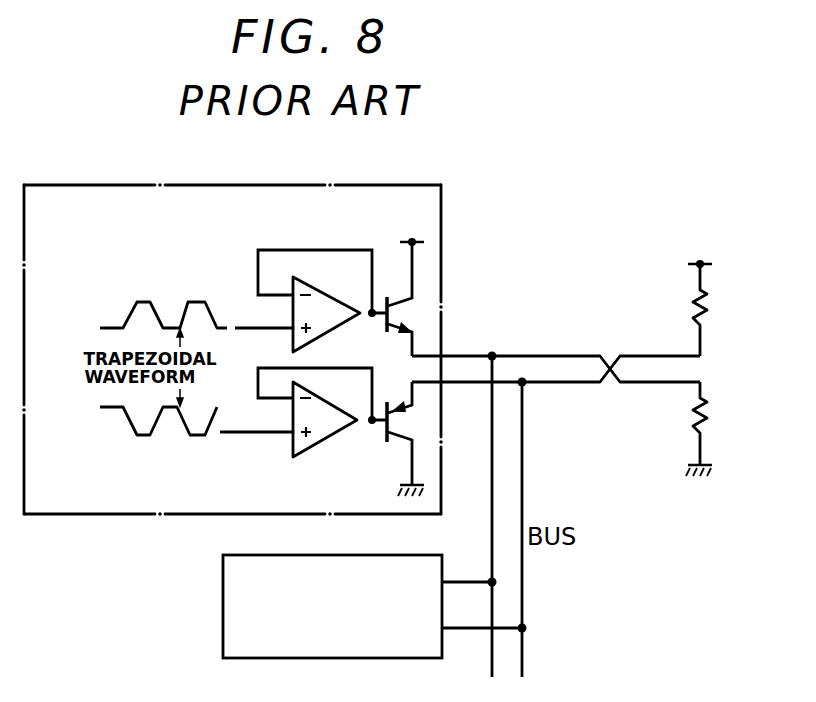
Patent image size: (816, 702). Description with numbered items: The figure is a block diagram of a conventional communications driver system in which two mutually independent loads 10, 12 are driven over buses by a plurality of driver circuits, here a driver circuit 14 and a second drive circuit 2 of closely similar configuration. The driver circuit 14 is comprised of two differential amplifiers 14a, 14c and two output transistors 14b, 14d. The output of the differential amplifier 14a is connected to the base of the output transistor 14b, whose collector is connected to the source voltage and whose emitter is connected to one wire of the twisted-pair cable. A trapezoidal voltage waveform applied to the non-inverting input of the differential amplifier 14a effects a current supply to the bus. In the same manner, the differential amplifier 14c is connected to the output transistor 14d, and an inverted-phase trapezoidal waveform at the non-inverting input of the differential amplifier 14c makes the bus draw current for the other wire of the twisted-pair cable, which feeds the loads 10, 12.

The driver circuit 14 is at (440, 226).
The differential amplifier 14a is at (345, 296).
The output transistor 14b is at (400, 316).
The differential amplifier 14c is at (304, 458).
The output transistor 14d is at (396, 438).
The load 10 is at (712, 310).
The load 12 is at (708, 428).
The drive circuit 2 is at (375, 606).